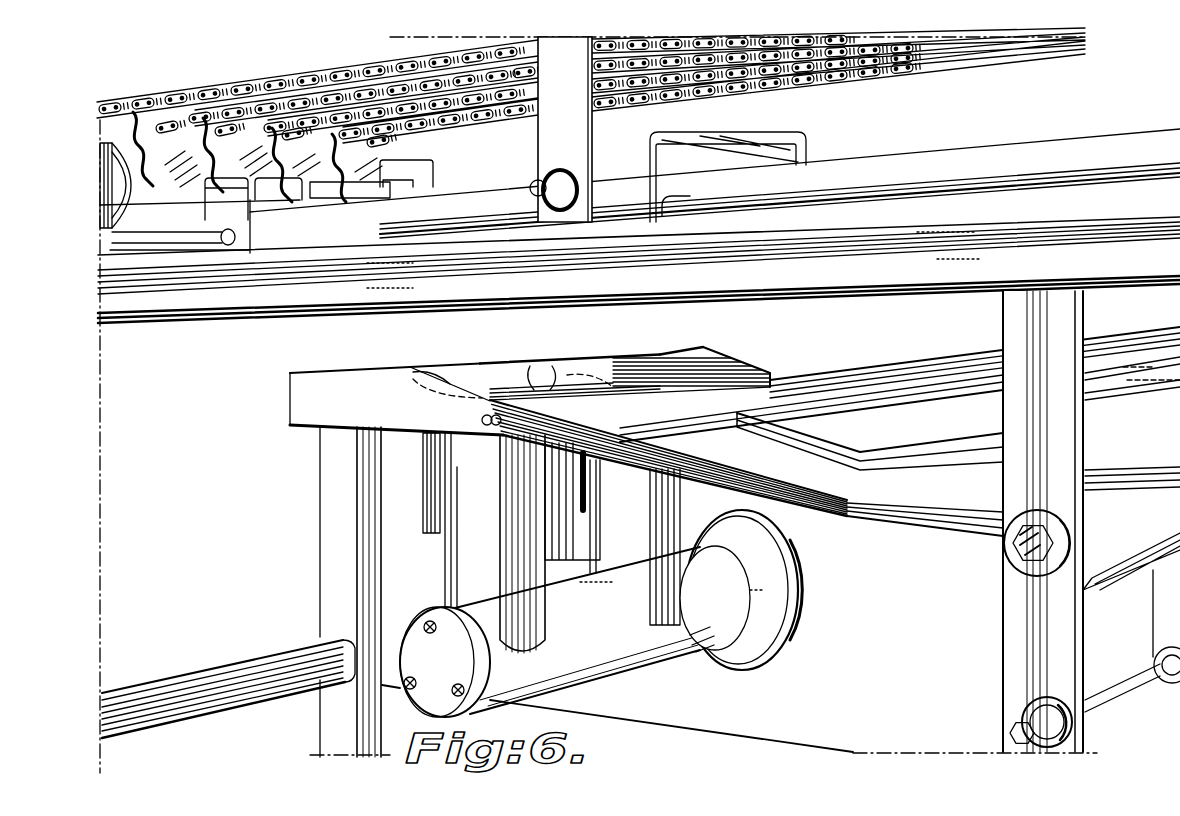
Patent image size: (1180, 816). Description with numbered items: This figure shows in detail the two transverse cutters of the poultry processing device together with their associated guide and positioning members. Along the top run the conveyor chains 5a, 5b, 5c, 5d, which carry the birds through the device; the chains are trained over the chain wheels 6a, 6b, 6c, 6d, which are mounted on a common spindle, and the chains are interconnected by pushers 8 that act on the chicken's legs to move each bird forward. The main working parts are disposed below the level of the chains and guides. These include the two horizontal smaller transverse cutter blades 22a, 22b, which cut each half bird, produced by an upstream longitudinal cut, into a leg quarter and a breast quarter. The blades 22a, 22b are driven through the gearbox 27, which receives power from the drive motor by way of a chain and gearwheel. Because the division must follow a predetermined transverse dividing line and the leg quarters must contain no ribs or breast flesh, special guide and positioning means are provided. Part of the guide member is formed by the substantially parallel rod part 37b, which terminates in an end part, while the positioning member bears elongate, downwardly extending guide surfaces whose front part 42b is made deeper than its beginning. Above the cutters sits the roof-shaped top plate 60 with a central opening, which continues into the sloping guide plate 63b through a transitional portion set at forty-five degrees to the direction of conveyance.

The conveyor chain 5a is at (134, 100).
The conveyor chain 5b is at (363, 67).
The conveyor chain 5c is at (372, 140).
The conveyor chain 5d is at (523, 100).
The chain wheel 6a is at (145, 237).
The chain wheel 6b is at (183, 150).
The chain wheel 6c is at (250, 150).
The chain wheel 6d is at (317, 147).
The pusher 8 is at (283, 80).
The transverse cutter blade 22a is at (483, 365).
The transverse cutter blade 22b is at (613, 367).
The roof-shaped top plate 60 is at (543, 363).
The parallel rod part 37b is at (827, 380).
The sloping guide plate 63b is at (783, 483).
The guide surface front part 42b is at (907, 453).
The gearbox 27 is at (656, 648).